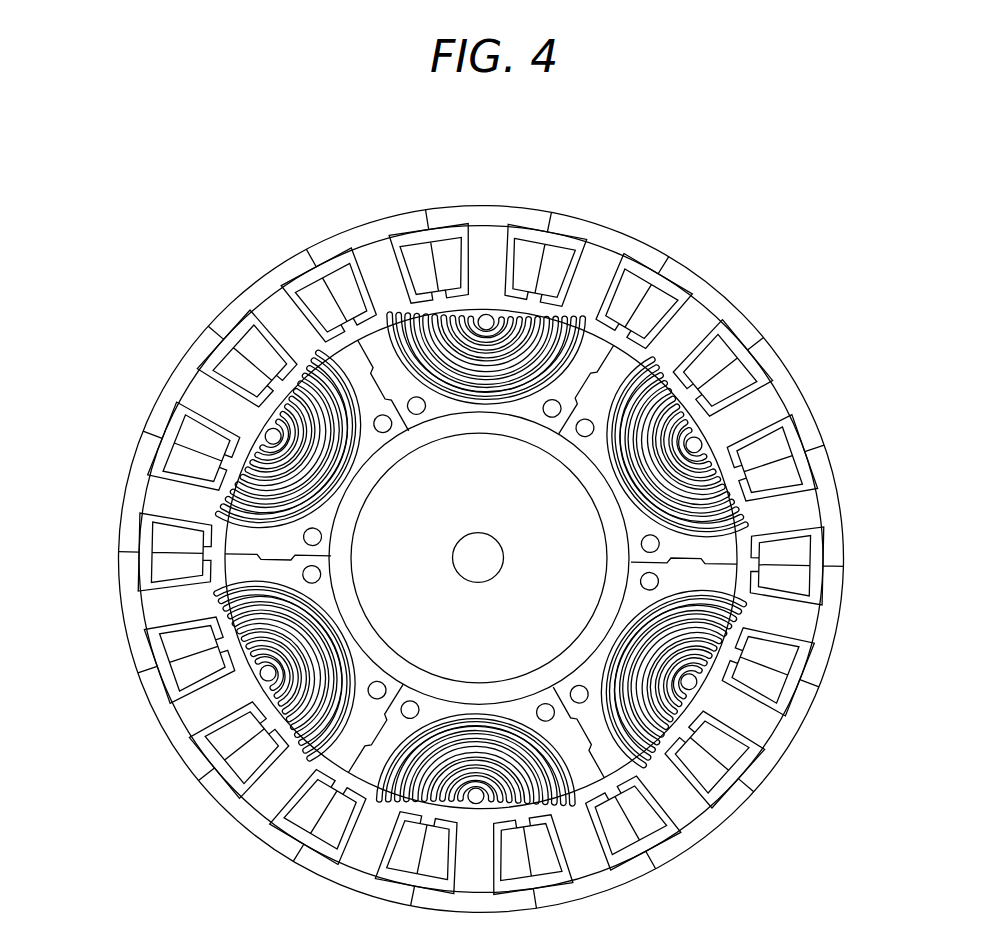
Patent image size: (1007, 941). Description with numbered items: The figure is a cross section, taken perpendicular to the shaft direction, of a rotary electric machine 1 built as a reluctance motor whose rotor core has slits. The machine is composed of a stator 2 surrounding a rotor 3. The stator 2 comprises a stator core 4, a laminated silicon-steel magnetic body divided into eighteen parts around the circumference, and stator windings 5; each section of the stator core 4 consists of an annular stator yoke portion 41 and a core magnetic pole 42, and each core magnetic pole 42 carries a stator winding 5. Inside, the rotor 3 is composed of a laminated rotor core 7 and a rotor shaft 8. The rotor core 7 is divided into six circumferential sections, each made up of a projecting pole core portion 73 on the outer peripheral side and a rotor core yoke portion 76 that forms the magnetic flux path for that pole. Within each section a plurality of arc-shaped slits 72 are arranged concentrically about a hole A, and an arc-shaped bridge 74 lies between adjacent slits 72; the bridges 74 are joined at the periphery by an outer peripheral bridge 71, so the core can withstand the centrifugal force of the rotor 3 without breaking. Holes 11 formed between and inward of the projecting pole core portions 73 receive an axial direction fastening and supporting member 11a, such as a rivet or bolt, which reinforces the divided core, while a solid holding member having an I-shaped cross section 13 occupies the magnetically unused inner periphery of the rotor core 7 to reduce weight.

The rotary electric machine 1 is at (572, 198).
The stator 2 is at (803, 373).
The rotor 3 is at (345, 345).
The stator core 4 is at (807, 430).
The stator winding 5 is at (795, 475).
The rotor core 7 is at (705, 742).
The rotor shaft 8 is at (483, 563).
The hole 11 is at (297, 583).
The axial direction fastening and supporting member 11a is at (306, 572).
The solid holding member having an I-shaped cross section 13 is at (387, 612).
The stator yoke portion 41 is at (817, 583).
The core magnetic pole 42 is at (757, 603).
The outer peripheral bridge 71 is at (393, 328).
The arc-shaped slit 72 is at (608, 310).
The projecting pole core portion 73 is at (618, 355).
The bridge 74 is at (558, 327).
The rotor core yoke portion 76 is at (673, 400).
The hole A is at (489, 314).